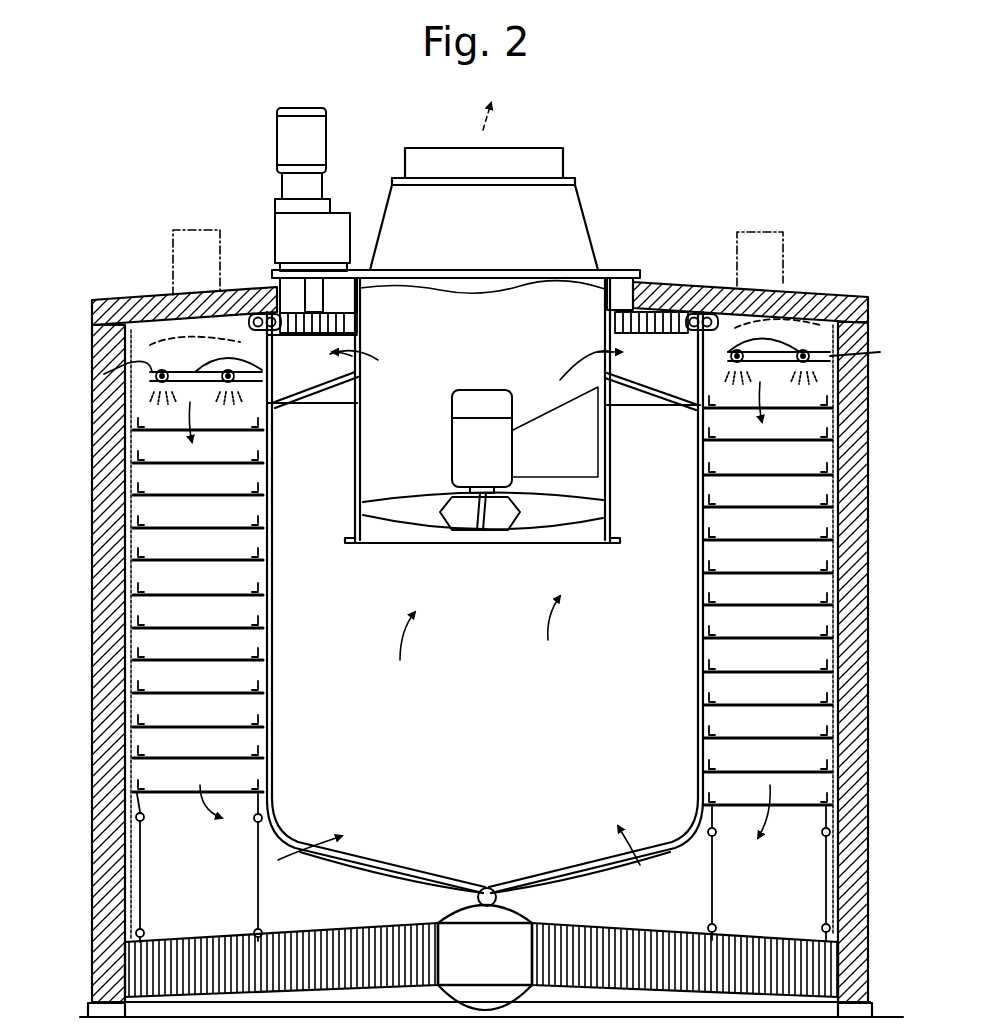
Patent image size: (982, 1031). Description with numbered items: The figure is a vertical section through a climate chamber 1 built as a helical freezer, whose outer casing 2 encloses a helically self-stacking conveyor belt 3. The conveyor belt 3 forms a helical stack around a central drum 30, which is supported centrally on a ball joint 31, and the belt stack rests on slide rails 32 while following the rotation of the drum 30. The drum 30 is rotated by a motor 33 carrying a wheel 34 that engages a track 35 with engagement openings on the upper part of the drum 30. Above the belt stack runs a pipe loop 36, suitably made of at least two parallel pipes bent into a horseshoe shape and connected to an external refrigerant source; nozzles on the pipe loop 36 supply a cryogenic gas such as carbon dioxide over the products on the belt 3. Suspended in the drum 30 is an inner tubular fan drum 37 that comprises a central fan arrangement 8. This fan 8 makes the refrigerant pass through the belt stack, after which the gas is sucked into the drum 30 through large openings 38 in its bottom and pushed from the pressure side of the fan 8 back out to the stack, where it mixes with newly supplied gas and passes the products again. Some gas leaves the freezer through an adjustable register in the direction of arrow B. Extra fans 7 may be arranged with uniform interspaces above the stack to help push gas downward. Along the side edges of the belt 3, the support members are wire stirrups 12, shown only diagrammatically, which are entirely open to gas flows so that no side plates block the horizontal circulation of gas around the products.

The climate chamber 1 is at (814, 242).
The outer casing 2 is at (855, 430).
The conveyor belt 3 is at (800, 480).
The extra fans 7 is at (150, 286).
The central fan arrangement 8 is at (400, 512).
The wire stirrups 12 is at (830, 545).
The central drum 30 is at (273, 586).
The ball joint 31 is at (480, 891).
The slide rails 32 is at (144, 818).
The motor 33 is at (277, 135).
The wheel 34 is at (357, 327).
The track 35 is at (282, 292).
The pipe loop 36 is at (104, 374).
The inner tubular fan drum 37 is at (355, 437).
The openings 38 is at (385, 870).
The arrow B is at (488, 302).